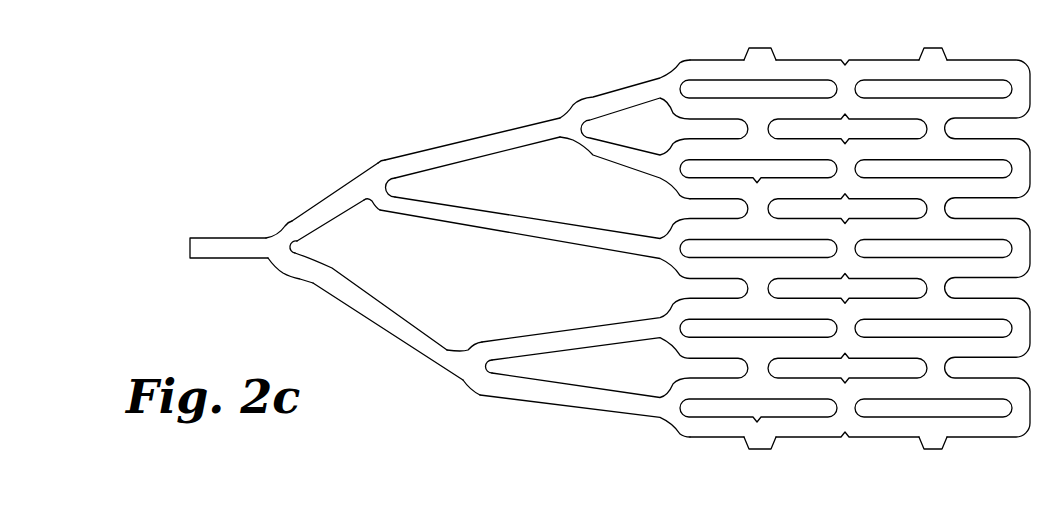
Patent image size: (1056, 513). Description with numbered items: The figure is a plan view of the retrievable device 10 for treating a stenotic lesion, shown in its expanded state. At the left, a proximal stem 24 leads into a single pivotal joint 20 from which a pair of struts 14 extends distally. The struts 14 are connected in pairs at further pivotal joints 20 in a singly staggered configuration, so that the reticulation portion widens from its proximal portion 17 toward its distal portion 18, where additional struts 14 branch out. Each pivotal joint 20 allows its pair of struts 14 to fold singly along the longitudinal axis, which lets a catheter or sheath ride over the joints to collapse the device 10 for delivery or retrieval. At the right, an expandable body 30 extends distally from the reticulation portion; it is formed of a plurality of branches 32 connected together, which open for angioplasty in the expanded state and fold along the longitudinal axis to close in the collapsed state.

The retrievable device 10 is at (456, 70).
The struts 14 is at (328, 210).
The proximal portion 17 is at (318, 278).
The distal portion 18 is at (635, 90).
The pivotal joints 20 is at (277, 244).
The proximal stem 24 is at (228, 247).
The expandable body 30 is at (815, 73).
The branches 32 is at (722, 108).